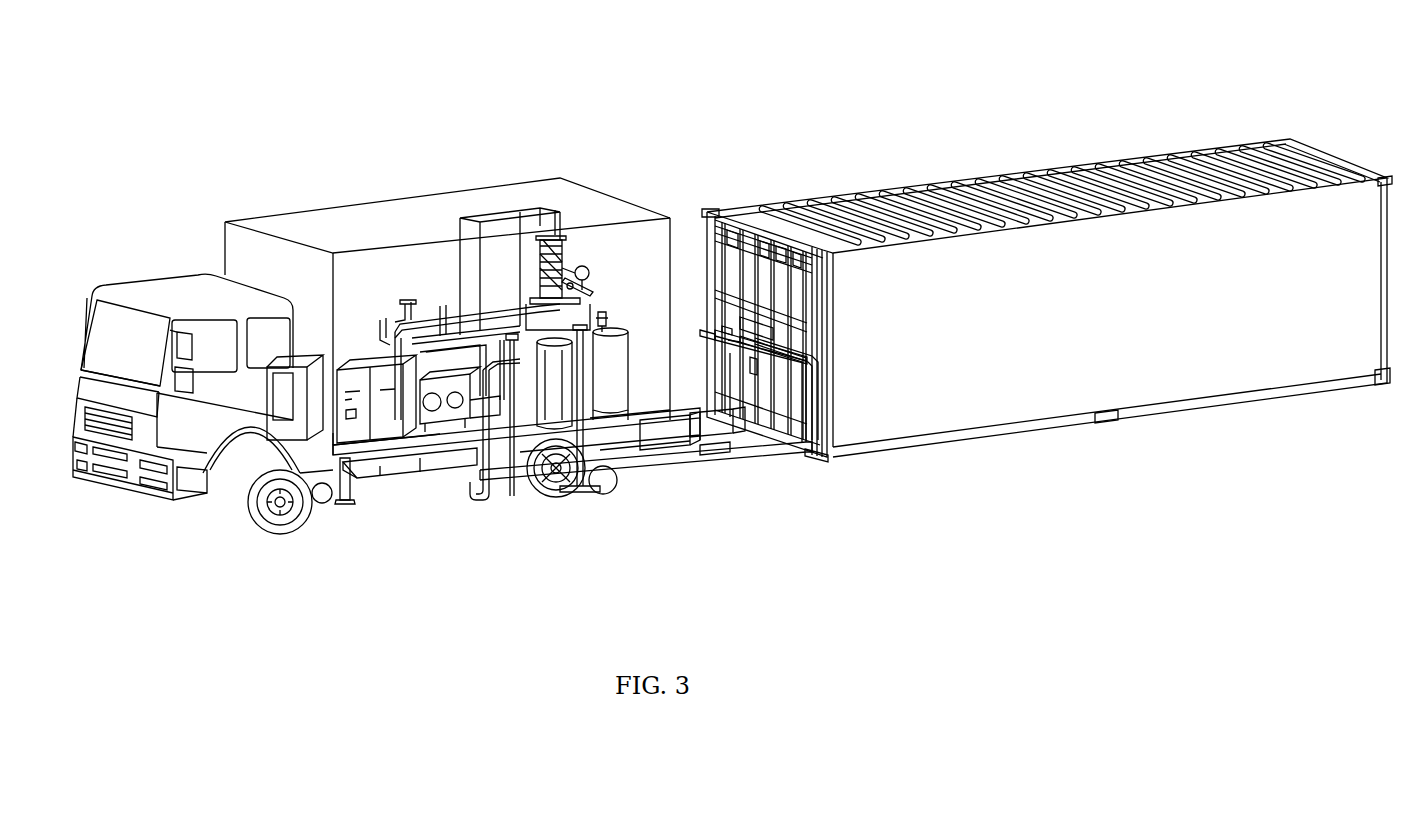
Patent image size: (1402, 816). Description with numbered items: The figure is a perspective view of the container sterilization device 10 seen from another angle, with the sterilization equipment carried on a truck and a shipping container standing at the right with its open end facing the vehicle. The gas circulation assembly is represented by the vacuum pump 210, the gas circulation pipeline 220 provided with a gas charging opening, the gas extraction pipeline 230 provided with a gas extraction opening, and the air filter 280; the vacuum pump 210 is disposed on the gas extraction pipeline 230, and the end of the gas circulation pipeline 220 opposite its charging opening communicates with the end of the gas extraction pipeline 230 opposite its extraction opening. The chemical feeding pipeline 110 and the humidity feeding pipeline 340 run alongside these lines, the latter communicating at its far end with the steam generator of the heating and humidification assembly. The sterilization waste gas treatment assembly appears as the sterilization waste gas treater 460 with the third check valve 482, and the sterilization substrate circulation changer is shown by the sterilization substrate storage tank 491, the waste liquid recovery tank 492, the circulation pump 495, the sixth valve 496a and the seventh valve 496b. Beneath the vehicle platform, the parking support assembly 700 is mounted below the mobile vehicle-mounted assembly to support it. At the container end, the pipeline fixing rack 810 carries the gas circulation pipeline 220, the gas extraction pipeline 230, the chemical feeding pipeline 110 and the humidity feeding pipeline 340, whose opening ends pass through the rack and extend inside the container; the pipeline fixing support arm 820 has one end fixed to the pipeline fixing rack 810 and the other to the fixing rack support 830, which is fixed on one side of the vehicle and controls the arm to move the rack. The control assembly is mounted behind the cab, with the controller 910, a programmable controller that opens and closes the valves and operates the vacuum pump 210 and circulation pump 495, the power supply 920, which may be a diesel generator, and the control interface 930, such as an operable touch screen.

The container sterilization device 10 is at (553, 137).
The chemical feeding pipeline 110 is at (584, 460).
The vacuum pump 210 is at (453, 412).
The gas circulation pipeline 220 is at (575, 491).
The gas extraction pipeline 230 is at (485, 481).
The air filter 280 is at (512, 496).
The humidity feeding pipeline 340 is at (714, 345).
The sterilization waste gas treater 460 is at (534, 290).
The third check valve 482 is at (575, 276).
The sterilization substrate storage tank 491 is at (556, 341).
The waste liquid recovery tank 492 is at (626, 382).
The circulation pump 495 is at (603, 462).
The sixth valve 496a is at (604, 314).
The seventh valve 496b is at (574, 288).
The parking support assembly 700 is at (353, 492).
The pipeline fixing rack 810 is at (752, 226).
The pipeline fixing support arm 820 is at (742, 452).
The fixing rack support 830 is at (688, 452).
The controller 910 is at (355, 368).
The power supply 920 is at (292, 358).
The control interface 930 is at (127, 284).